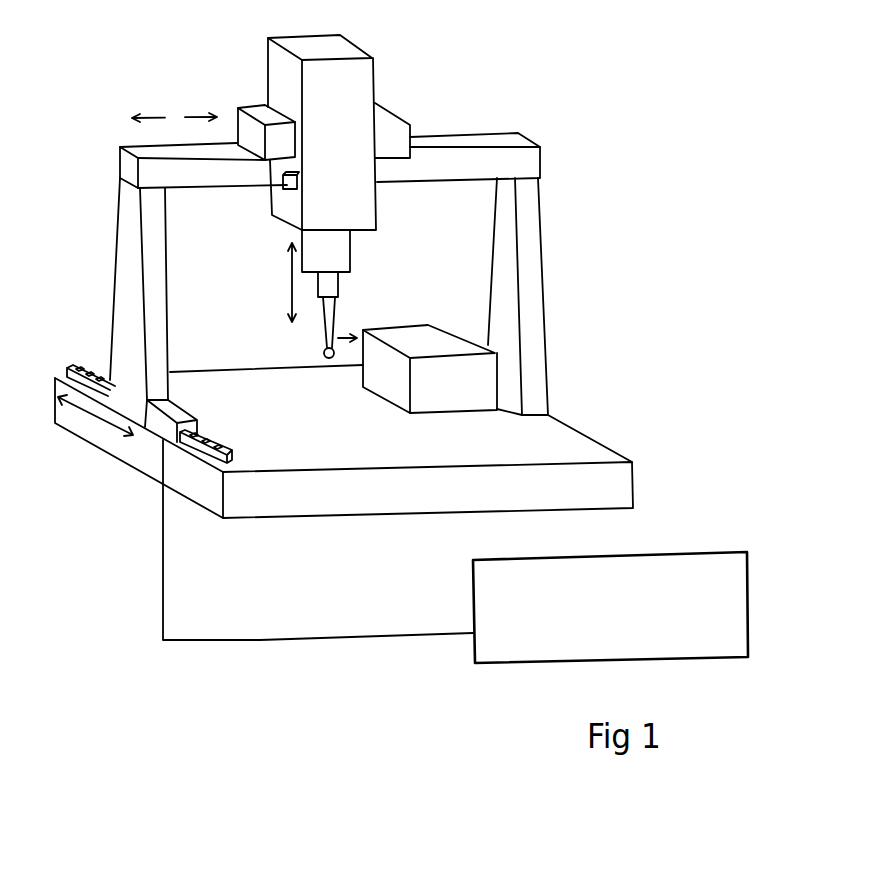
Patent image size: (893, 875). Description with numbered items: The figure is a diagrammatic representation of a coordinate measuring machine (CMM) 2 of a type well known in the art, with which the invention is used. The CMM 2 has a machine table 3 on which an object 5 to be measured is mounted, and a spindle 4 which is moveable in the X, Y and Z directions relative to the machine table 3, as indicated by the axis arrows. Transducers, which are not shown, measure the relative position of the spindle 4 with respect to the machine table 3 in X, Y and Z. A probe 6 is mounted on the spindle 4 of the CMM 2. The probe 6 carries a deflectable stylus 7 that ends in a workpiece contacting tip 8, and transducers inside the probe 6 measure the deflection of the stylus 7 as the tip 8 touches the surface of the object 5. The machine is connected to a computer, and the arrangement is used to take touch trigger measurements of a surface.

The coordinate measuring machine 2 is at (470, 100).
The machine table 3 is at (300, 500).
The spindle 4 is at (335, 252).
The object 5 is at (458, 393).
The probe 6 is at (342, 295).
The deflectable stylus 7 is at (325, 332).
The workpiece contacting tip 8 is at (328, 358).